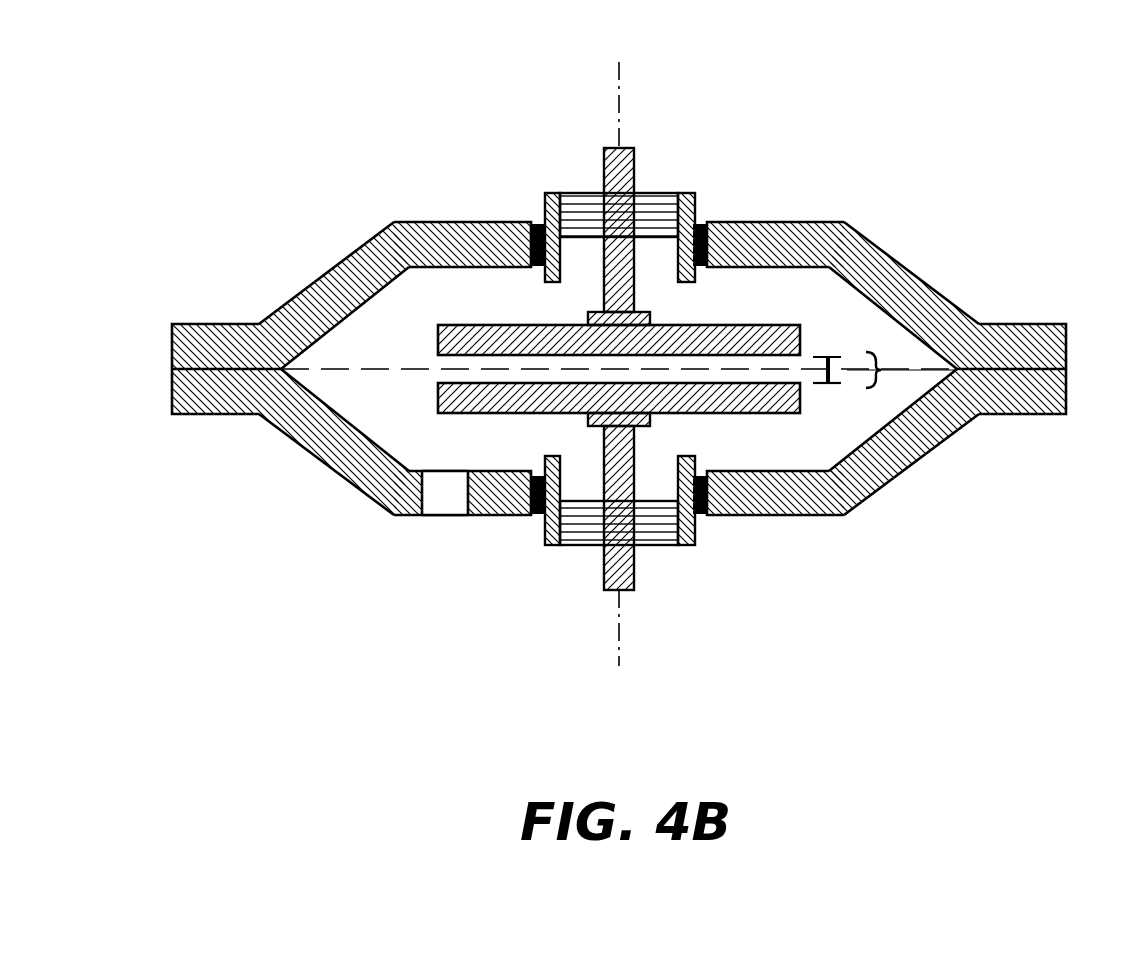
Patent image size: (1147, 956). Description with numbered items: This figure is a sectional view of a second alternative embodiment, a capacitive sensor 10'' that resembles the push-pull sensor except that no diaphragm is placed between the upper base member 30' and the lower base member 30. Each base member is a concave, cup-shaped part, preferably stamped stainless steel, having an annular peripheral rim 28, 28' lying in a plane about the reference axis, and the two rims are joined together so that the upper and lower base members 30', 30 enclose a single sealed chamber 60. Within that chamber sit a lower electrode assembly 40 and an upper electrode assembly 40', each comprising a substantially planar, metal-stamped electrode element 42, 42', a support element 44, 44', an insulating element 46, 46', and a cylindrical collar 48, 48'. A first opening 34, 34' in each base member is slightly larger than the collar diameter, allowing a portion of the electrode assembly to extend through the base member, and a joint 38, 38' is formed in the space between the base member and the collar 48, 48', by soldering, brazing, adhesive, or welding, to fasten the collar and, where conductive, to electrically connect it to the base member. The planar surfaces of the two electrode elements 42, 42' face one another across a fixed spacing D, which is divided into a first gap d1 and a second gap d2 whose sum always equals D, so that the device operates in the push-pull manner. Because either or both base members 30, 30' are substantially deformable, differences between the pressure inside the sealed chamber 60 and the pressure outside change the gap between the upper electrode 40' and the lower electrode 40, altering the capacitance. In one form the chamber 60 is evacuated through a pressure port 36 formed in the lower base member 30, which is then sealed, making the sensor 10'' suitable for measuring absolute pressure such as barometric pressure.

The sensor 10'' is at (1006, 50).
The annular peripheral rim 28 is at (1047, 404).
The annular peripheral rim 28' is at (200, 331).
The lower base member 30 is at (960, 456).
The upper base member 30' is at (277, 281).
The first opening 34 is at (439, 556).
The first opening 34' is at (803, 184).
The pressure port 36 is at (437, 505).
The joint 38 is at (626, 518).
The joint 38' is at (619, 223).
The lower electrode assembly 40 is at (366, 466).
The upper electrode assembly 40' is at (888, 249).
The electrode element 42 is at (851, 537).
The electrode element 42' is at (384, 199).
The support element 44 is at (558, 570).
The support element 44' is at (673, 165).
The insulating element 46 is at (535, 590).
The insulating element 46' is at (701, 148).
The cylindrical collar 48 is at (660, 575).
The cylindrical collar 48' is at (575, 160).
The sealed chamber 60 is at (378, 348).
The gap distance d1 is at (841, 357).
The gap distance d2 is at (841, 383).
The fixed electrode spacing D is at (881, 370).